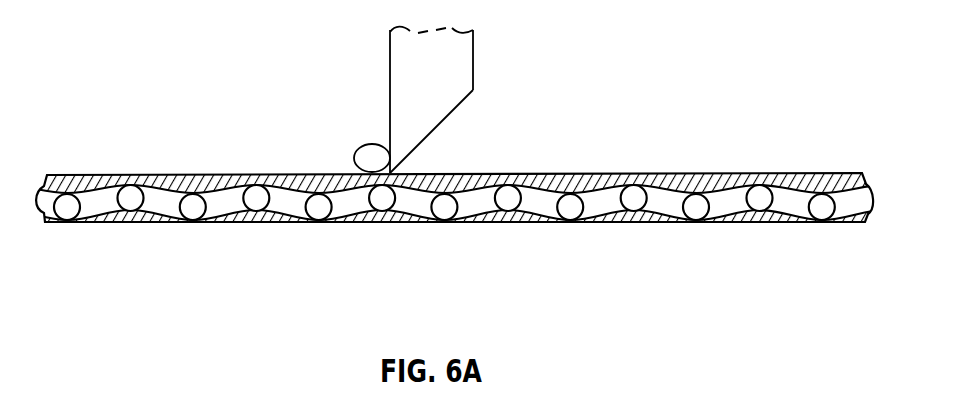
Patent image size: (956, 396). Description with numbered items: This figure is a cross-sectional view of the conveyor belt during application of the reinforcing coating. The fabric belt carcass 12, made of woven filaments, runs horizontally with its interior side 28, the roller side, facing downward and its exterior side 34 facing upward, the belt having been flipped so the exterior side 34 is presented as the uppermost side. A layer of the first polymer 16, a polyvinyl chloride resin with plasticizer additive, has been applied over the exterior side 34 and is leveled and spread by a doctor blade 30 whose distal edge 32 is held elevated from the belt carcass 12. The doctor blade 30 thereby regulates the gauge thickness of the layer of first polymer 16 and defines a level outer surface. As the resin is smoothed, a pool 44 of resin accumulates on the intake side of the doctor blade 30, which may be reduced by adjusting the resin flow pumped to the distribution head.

The belt carcass 12 is at (158, 203).
The first polymer 16 is at (600, 173).
The interior side 28 is at (581, 267).
The doctor blade 30 is at (405, 67).
The distal edge 32 is at (405, 154).
The exterior side 34 is at (219, 92).
The pool 44 is at (362, 155).